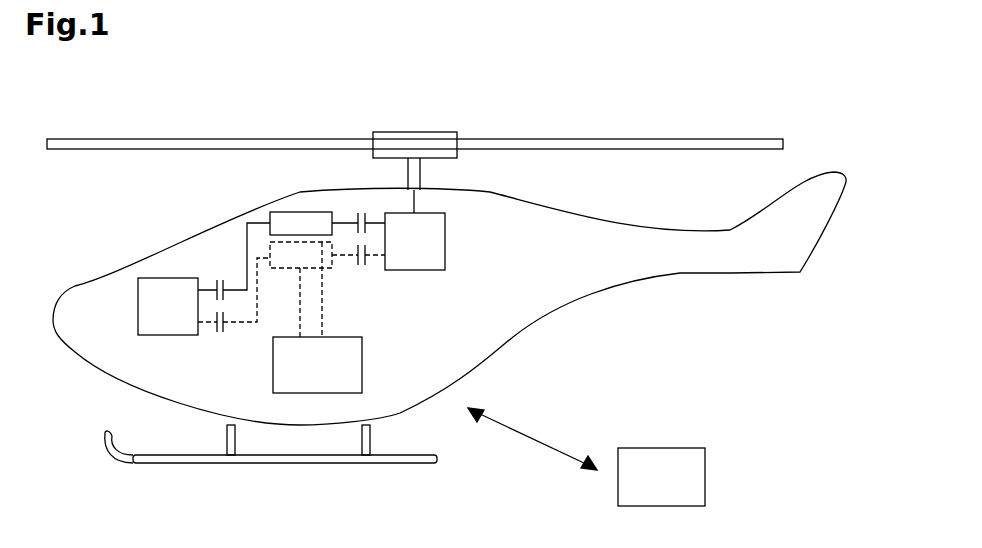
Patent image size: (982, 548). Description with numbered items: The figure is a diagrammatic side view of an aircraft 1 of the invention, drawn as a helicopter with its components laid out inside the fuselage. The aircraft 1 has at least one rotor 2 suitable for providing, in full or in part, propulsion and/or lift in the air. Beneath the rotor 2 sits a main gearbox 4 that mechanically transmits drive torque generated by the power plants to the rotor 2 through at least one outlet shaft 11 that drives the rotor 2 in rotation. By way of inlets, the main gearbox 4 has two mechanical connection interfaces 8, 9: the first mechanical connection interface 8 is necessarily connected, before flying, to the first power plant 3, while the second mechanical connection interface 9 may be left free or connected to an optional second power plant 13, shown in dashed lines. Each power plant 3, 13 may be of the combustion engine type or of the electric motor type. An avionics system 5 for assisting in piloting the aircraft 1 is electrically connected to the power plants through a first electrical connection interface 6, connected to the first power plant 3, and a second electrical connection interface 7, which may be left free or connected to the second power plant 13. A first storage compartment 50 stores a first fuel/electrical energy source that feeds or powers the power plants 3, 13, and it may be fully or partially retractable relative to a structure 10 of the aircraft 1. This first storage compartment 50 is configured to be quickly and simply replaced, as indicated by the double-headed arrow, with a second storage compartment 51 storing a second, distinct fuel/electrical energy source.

The aircraft 1 is at (449, 317).
The rotor 2 is at (635, 139).
The first power plant 3 is at (300, 212).
The main gearbox 4 is at (445, 257).
The avionics system 5 is at (138, 295).
The first electrical connection interface 6 is at (207, 287).
The second electrical connection interface 7 is at (210, 325).
The first mechanical connection interface 8 is at (373, 223).
The second mechanical connection interface 9 is at (372, 258).
The structure 10 is at (492, 350).
The outlet shaft 11 is at (413, 203).
The second power plant 13 is at (250, 250).
The first storage compartment 50 is at (273, 352).
The second storage compartment 51 is at (705, 462).